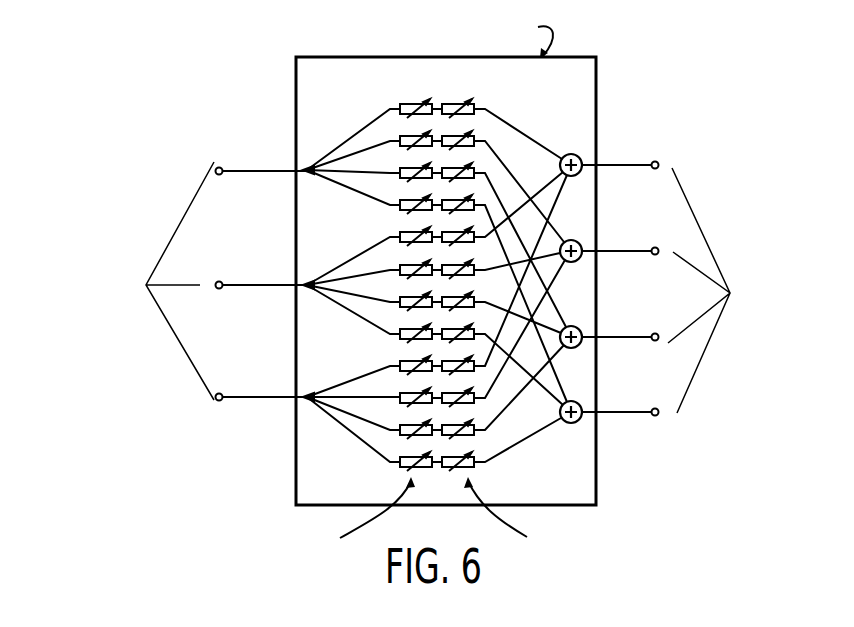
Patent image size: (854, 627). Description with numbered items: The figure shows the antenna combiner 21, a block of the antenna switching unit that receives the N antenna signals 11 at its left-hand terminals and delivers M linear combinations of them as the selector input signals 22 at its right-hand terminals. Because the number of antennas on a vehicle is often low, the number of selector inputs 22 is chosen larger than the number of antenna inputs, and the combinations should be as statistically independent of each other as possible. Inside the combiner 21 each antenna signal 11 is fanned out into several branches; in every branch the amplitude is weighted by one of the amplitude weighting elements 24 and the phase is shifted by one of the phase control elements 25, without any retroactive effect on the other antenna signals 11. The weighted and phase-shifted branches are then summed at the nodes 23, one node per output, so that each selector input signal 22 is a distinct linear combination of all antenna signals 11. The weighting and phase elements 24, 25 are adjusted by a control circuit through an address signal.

The antenna signals 11 is at (172, 286).
The antenna combiner 21 is at (295, 476).
The selector input signals 22 is at (687, 287).
The nodes 23 is at (571, 153).
The amplitude weighting elements 24 is at (404, 99).
The phase control elements 25 is at (452, 99).